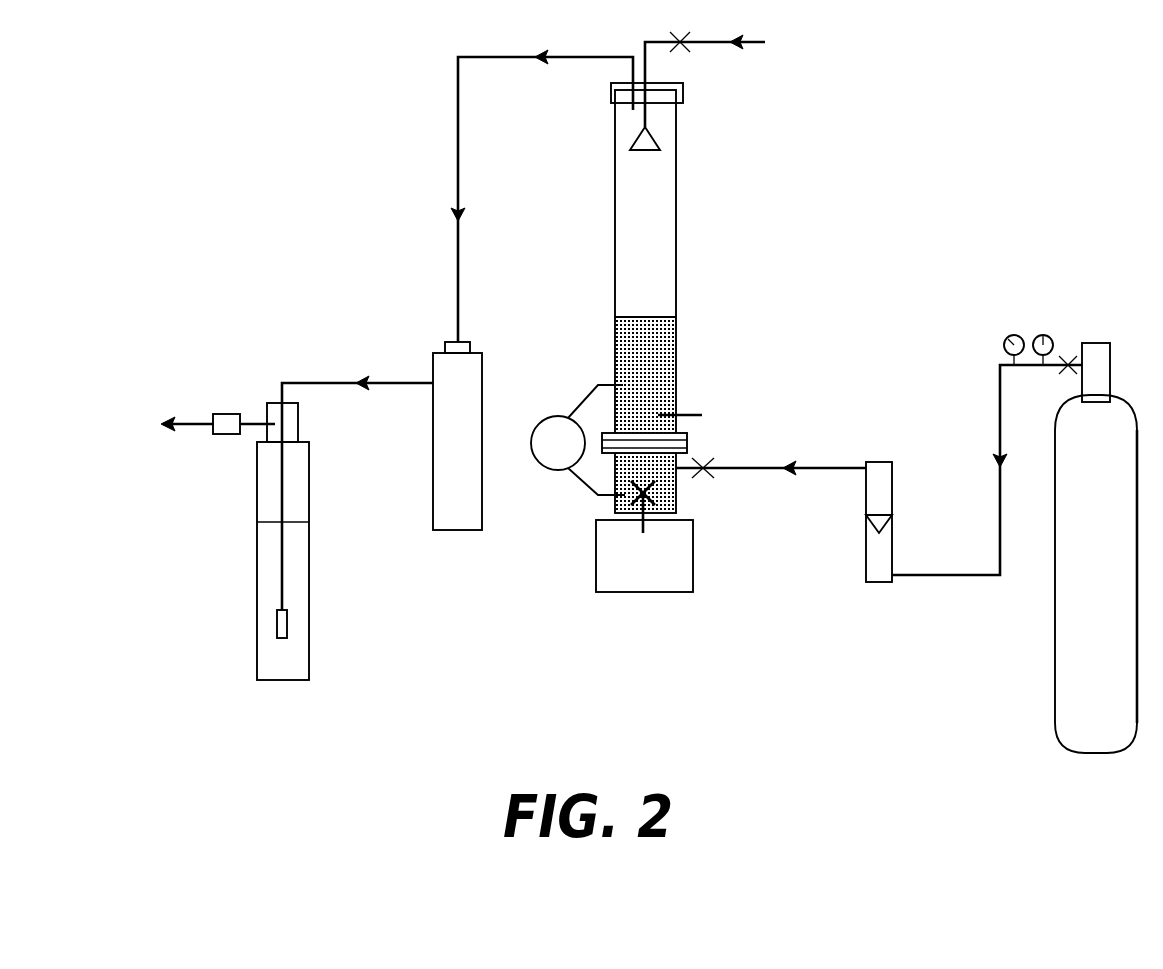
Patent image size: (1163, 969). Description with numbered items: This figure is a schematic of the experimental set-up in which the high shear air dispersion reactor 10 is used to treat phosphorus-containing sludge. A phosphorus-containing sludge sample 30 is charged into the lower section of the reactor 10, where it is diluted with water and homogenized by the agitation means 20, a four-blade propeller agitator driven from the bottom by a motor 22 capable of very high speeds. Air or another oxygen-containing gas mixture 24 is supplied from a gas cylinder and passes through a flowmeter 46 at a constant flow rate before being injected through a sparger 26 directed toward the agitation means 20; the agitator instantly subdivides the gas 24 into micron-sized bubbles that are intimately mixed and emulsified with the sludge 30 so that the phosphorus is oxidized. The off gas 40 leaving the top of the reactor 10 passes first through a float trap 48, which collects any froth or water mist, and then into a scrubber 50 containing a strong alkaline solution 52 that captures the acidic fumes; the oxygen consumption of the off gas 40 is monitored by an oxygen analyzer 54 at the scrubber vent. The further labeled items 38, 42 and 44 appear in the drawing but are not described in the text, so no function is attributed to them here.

The reactor 10 is at (708, 226).
The agitation means 20 is at (660, 499).
The motor 22 is at (634, 577).
The oxygen-containing gas 24 is at (740, 468).
The sparger 26 is at (1082, 519).
The phosphorus-containing sludge 30 is at (615, 357).
The inlet line 38 is at (717, 90).
The off gas 40 is at (598, 53).
The temperature probe 42 is at (692, 410).
The controller 44 is at (578, 440).
The flowmeter 46 is at (865, 575).
The float trap 48 is at (458, 530).
The scrubber 50 is at (282, 680).
The strong alkaline solution 52 is at (294, 658).
The oxygen analyzer 54 is at (227, 412).